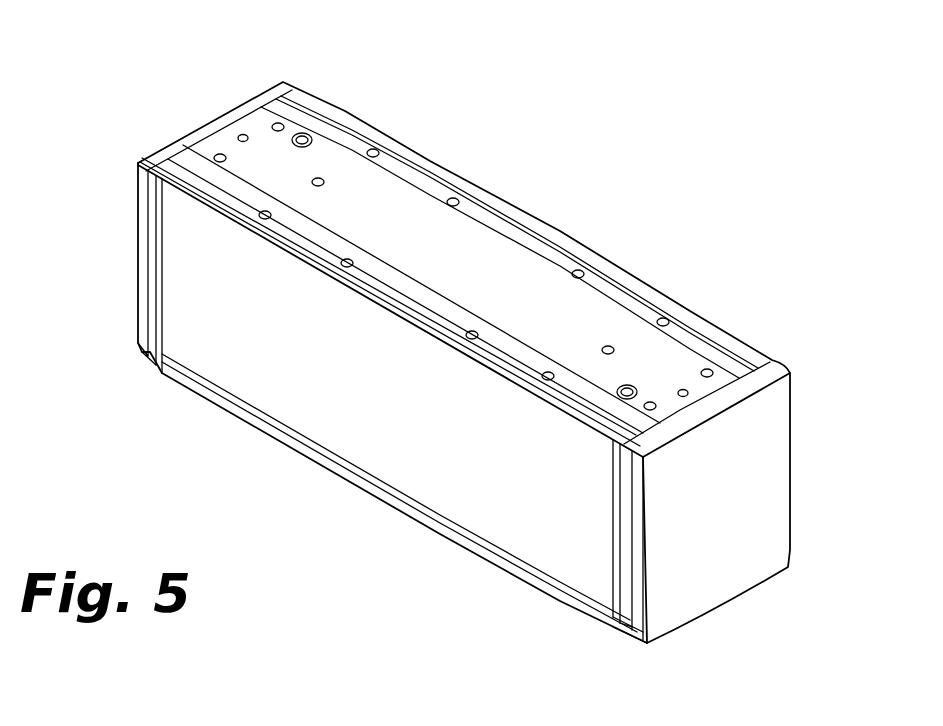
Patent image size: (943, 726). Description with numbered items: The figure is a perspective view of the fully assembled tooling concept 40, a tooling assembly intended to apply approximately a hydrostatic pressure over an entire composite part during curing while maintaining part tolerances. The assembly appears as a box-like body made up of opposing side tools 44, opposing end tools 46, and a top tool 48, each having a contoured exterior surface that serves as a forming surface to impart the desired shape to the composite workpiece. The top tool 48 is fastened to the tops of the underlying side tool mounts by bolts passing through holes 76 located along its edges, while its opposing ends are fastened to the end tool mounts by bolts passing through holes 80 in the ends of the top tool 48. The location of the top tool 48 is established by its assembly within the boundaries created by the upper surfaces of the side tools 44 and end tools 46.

The tooling concept 40 is at (310, 595).
The side tool 44 is at (398, 458).
The end tool 46 is at (207, 133).
The top tool 48 is at (500, 278).
The holes 76 is at (375, 150).
The holes 80 is at (242, 134).